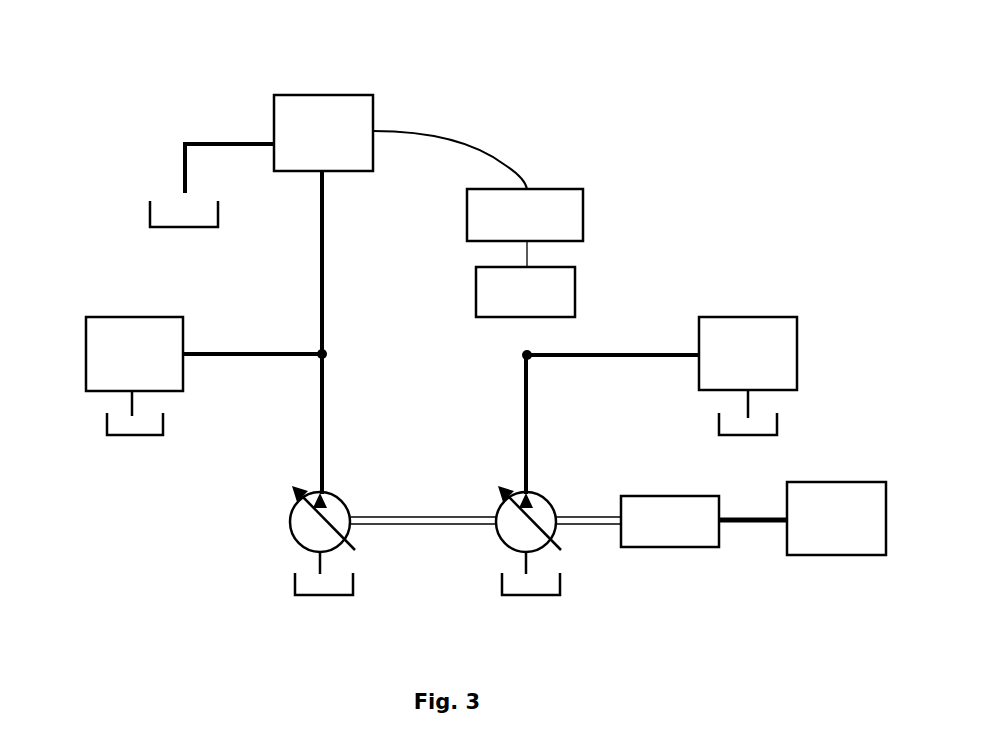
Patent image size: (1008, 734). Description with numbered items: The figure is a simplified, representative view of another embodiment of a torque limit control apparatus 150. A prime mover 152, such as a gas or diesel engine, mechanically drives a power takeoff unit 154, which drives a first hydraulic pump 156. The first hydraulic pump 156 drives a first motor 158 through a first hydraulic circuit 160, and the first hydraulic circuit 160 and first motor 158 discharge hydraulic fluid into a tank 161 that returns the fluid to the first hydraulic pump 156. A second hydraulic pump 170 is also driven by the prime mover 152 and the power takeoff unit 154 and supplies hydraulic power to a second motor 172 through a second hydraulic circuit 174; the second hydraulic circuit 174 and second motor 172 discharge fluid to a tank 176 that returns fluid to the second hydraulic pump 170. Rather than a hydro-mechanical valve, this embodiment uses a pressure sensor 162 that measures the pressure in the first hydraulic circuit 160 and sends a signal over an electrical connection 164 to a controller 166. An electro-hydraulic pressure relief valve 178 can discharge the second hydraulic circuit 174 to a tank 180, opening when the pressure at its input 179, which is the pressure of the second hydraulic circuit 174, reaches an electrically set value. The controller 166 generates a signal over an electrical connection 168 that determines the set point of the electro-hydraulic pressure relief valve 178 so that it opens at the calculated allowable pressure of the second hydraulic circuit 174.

The torque limit control apparatus 150 is at (420, 34).
The prime mover 152 is at (845, 556).
The power takeoff unit 154 is at (690, 548).
The first hydraulic pump 156 is at (498, 531).
The first motor 158 is at (788, 391).
The first hydraulic circuit 160 is at (652, 357).
The tank 161 is at (768, 436).
The pressure sensor 162 is at (487, 318).
The electrical connection 164 is at (530, 258).
The controller 166 is at (483, 242).
The electrical connection 168 is at (483, 147).
The second hydraulic pump 170 is at (291, 530).
The second motor 172 is at (95, 392).
The second hydraulic circuit 174 is at (289, 357).
The tank 176 is at (117, 436).
The electro-hydraulic pressure relief valve 178 is at (298, 172).
The input 179 is at (325, 172).
The tank 180 is at (157, 228).